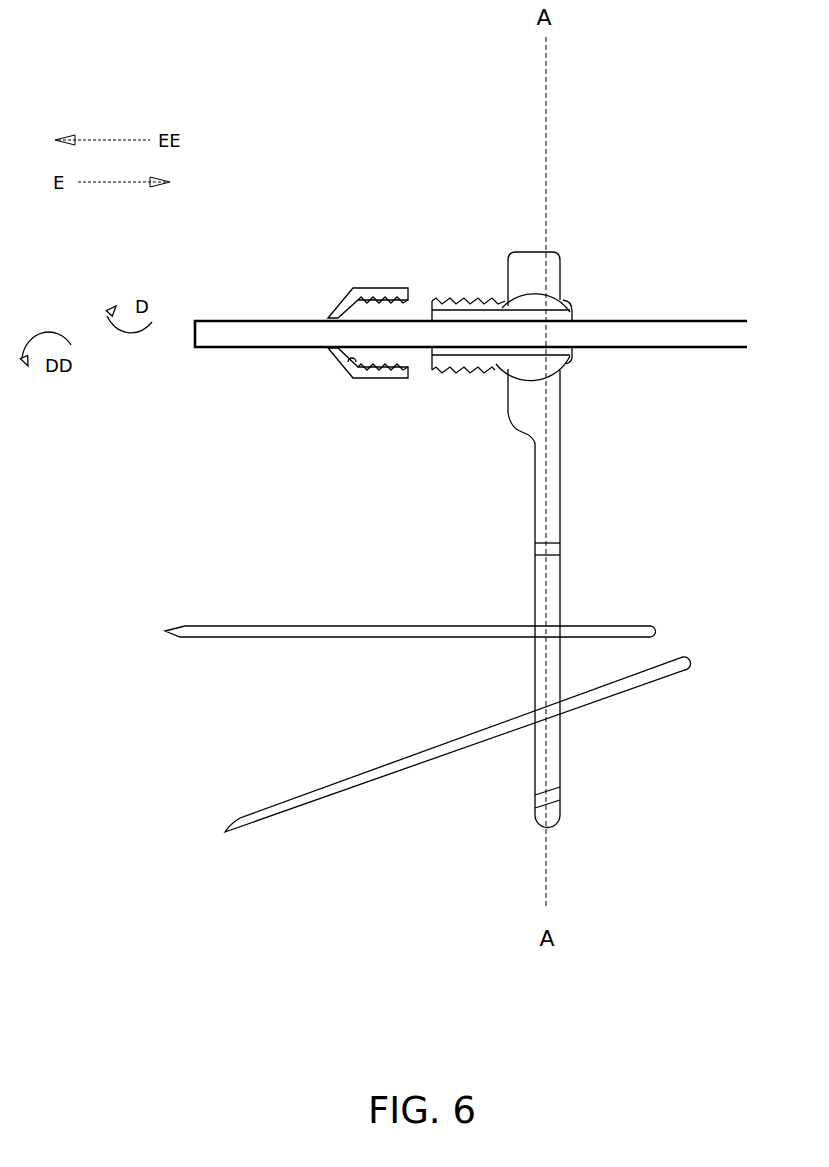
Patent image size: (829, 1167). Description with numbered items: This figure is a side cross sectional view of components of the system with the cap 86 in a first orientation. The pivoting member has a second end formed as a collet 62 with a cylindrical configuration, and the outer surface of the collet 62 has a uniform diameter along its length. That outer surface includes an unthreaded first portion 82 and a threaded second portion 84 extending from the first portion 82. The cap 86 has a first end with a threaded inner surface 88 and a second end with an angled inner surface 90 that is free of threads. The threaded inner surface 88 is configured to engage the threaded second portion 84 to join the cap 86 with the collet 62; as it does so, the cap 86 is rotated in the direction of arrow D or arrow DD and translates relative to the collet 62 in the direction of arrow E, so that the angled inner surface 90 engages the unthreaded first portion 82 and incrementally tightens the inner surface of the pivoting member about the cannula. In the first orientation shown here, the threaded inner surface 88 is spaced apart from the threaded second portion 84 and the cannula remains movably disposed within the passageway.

The collet 62 is at (494, 297).
The unthreaded first portion 82 is at (437, 375).
The threaded second portion 84 is at (466, 297).
The cap 86 is at (347, 280).
The threaded inner surface 88 is at (428, 298).
The angled inner surface 90 is at (352, 376).